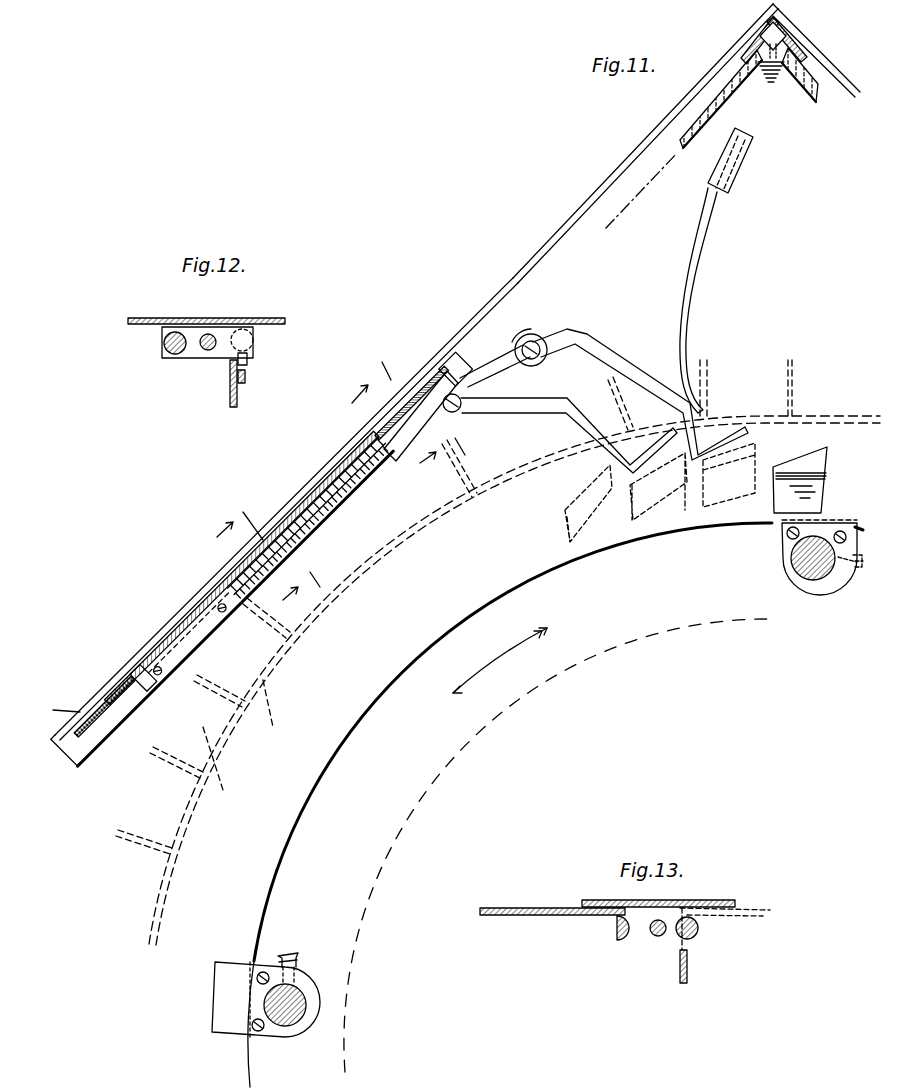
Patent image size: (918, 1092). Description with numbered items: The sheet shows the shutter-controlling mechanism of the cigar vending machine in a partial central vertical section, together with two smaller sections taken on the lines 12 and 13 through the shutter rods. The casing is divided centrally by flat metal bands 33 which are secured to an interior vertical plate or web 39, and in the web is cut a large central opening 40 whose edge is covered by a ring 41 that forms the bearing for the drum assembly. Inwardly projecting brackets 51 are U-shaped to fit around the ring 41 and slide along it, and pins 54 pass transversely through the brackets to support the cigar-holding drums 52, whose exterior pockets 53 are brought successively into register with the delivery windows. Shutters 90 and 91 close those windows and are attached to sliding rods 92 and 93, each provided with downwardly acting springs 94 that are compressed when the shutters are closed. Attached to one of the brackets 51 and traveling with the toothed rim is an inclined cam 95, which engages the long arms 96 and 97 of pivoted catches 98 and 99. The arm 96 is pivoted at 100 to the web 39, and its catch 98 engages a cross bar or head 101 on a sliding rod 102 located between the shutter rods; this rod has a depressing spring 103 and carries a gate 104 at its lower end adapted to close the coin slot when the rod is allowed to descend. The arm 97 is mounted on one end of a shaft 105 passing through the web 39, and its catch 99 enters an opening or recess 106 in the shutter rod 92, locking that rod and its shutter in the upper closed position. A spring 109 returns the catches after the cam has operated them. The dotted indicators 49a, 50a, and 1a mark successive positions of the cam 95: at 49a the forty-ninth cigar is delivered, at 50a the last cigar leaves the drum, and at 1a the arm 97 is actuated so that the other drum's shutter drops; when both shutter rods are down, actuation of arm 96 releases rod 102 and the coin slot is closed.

In FIG. 12, the flat metal bands 33 is at (250, 318).
In FIG. 13, the flat metal bands 33 is at (717, 900).
In FIG. 12, the interior vertical plate or web 39 is at (232, 405).
In FIG. 13, the interior vertical plate or web 39 is at (688, 973).
In FIG. 11, the central opening 40 is at (555, 845).
In FIG. 11, the ring 41 is at (360, 725).
In FIG. 11, the indicator 1a is at (610, 514).
In FIG. 11, the indicator 49a is at (751, 490).
In FIG. 11, the indicator 50a is at (678, 498).
In FIG. 11, the brackets 51 is at (272, 1028).
In FIG. 11, the cigar-holding drums 52 is at (243, 677).
In FIG. 11, the exterior pockets 53 is at (180, 790).
In FIG. 11, the pins 54 is at (306, 996).
In FIG. 11, the shutter 90 is at (203, 613).
In FIG. 13, the shutter 90 is at (750, 920).
In FIG. 13, the shutter 91 is at (577, 917).
In FIG. 11, the sliding rod 92 is at (335, 470).
In FIG. 12, the sliding rod 92 is at (254, 342).
In FIG. 13, the sliding rod 92 is at (683, 937).
In FIG. 12, the sliding rod 93 is at (172, 353).
In FIG. 13, the sliding rod 93 is at (628, 937).
In FIG. 11, the downwardly-acting springs 94 is at (338, 508).
In FIG. 11, the inclined cam 95 is at (808, 462).
In FIG. 11, the long arm 96 is at (620, 351).
In FIG. 11, the long arm 97 is at (542, 398).
In FIG. 11, the pivoted catch 98 is at (482, 372).
In FIG. 12, the pivoted catch 98 is at (248, 363).
In FIG. 11, the pivoted catch 99 is at (403, 453).
In FIG. 12, the pivoted catch 99 is at (246, 378).
In FIG. 11, the pivot 100 is at (535, 345).
In FIG. 11, the cross bar or head 101 is at (452, 357).
In FIG. 12, the cross bar or head 101 is at (215, 353).
In FIG. 11, the sliding rod 102 is at (422, 395).
In FIG. 12, the sliding rod 102 is at (208, 335).
In FIG. 13, the sliding rod 102 is at (655, 933).
In FIG. 11, the depressing-spring 103 is at (98, 697).
In FIG. 11, the gate 104 is at (75, 753).
In FIG. 11, the shaft 105 is at (458, 409).
In FIG. 11, the opening or recess 106 is at (318, 527).
In FIG. 11, the spring 109 is at (696, 294).
In FIG. 11, the section line 12 is at (406, 408).
In FIG. 11, the section line 13 is at (274, 541).